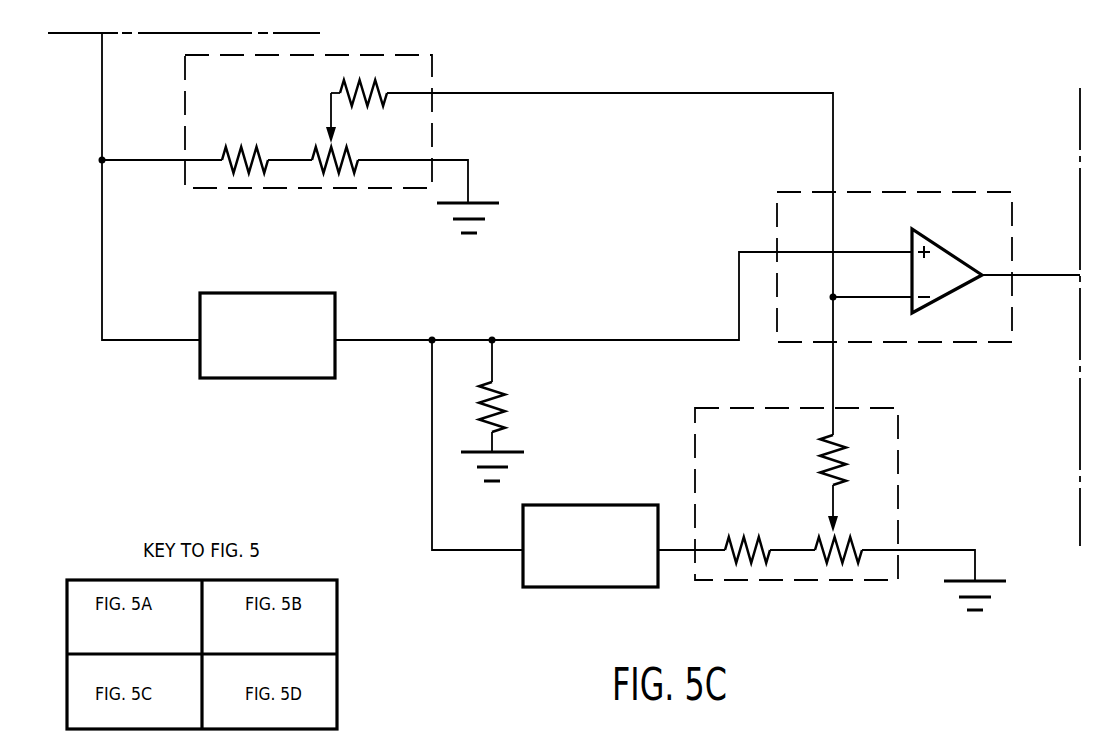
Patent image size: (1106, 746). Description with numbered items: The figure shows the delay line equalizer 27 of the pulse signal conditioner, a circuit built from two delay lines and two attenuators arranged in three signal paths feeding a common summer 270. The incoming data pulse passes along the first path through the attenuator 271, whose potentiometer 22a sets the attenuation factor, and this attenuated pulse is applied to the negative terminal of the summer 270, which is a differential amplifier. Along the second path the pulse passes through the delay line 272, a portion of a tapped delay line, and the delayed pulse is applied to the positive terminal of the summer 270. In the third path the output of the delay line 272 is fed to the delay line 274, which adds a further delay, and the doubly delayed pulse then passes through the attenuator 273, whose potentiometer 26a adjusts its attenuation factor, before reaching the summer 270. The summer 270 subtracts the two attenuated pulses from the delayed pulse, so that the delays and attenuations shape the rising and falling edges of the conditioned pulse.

The delay line equalizer 27 is at (693, 640).
The potentiometer 22a is at (329, 122).
The attenuator 271 is at (299, 139).
The delay line 272 is at (307, 293).
The summer 270 is at (925, 196).
The attenuator 273 is at (796, 479).
The delay line 274 is at (560, 505).
The potentiometer 26a is at (830, 512).